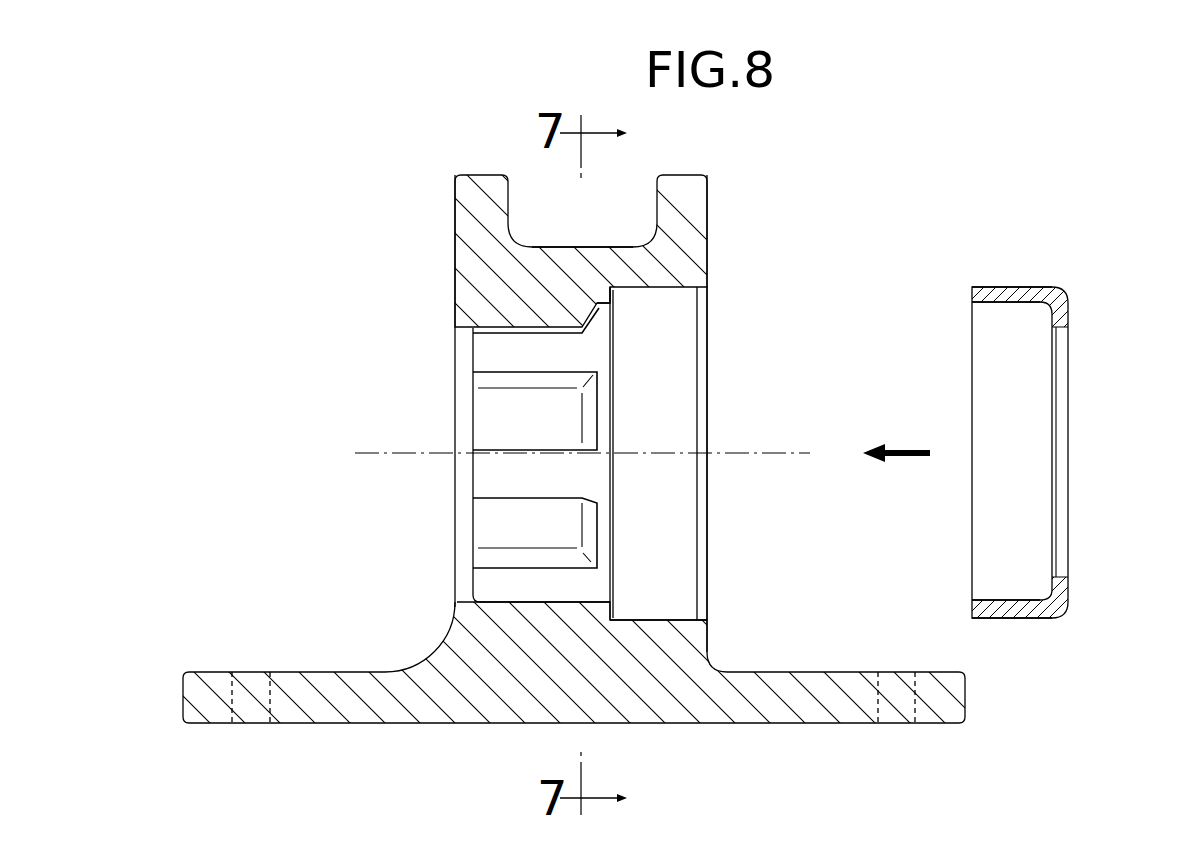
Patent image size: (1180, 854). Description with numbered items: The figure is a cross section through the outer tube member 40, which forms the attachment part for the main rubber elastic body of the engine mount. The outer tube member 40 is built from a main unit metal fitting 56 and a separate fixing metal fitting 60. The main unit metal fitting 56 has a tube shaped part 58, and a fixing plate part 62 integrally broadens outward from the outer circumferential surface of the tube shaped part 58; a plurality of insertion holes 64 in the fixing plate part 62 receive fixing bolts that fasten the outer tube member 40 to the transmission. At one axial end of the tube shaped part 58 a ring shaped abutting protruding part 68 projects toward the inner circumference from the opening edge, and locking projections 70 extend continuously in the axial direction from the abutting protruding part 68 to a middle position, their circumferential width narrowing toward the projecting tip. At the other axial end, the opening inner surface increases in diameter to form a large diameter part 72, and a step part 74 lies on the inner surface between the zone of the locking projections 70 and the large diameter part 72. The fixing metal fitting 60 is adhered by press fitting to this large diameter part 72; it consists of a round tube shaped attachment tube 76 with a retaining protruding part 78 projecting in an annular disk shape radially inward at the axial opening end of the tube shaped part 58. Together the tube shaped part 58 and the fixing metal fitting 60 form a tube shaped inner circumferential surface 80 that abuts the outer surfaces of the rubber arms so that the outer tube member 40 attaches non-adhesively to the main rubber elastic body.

The outer tube member 40 is at (333, 197).
The main unit metal fitting 56 is at (470, 262).
The tube shaped part 58 is at (556, 240).
The step part 74 is at (614, 296).
The locking projections 70 is at (527, 318).
The large diameter part 72 is at (652, 620).
The abutting protruding part 68 is at (465, 587).
The fixing plate part 62 is at (407, 723).
The insertion holes 64 is at (262, 697).
The tube shaped inner circumferential surface 80 is at (565, 603).
The fixing metal fitting 60 is at (1082, 300).
The attachment tube 76 is at (1005, 290).
The retaining protruding part 78 is at (1058, 593).